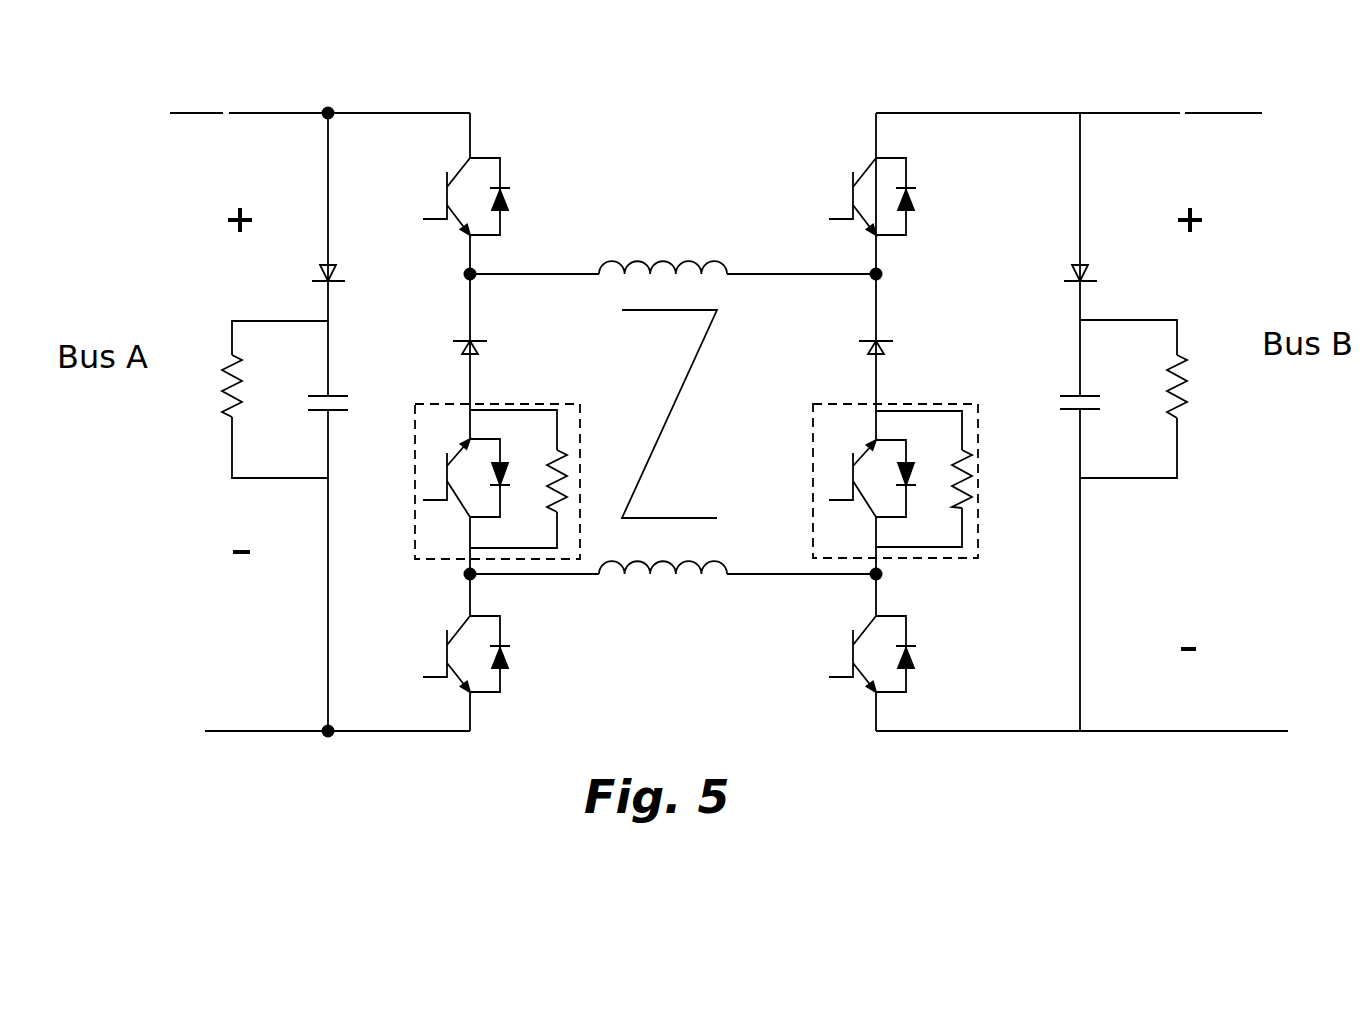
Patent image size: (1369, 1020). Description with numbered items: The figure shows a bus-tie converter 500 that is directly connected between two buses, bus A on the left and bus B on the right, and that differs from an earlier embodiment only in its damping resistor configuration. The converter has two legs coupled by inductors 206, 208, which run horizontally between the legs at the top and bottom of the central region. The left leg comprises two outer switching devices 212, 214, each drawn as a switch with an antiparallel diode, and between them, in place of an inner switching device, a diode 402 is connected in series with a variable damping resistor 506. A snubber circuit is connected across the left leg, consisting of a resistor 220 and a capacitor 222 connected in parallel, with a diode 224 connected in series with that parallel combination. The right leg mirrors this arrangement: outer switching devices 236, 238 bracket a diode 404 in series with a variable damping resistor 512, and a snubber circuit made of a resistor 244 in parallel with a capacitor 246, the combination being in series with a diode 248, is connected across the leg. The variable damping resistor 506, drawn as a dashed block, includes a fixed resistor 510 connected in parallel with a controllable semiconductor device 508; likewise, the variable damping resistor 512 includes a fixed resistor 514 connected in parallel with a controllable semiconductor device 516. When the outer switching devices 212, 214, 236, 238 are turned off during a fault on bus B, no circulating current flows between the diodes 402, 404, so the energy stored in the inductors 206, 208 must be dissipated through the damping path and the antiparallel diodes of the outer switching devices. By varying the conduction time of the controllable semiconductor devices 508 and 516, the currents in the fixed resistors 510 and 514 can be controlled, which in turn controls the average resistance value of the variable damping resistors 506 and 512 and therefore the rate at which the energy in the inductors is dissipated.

The bus-tie converter 500 is at (178, 57).
The inductor 206 is at (688, 258).
The inductor 208 is at (700, 565).
The outer switching device 212 is at (492, 158).
The outer switching device 214 is at (500, 692).
The resistor 220 is at (242, 389).
The capacitor 222 is at (322, 413).
The diode 224 is at (338, 264).
The outer switching device 236 is at (848, 179).
The outer switching device 238 is at (848, 652).
The resistor 244 is at (1180, 381).
The capacitor 246 is at (1092, 395).
The diode 248 is at (1084, 266).
The diode 402 is at (466, 356).
The diode 404 is at (870, 356).
The variable damping resistor 506 is at (415, 437).
The controllable semiconductor device 508 is at (460, 506).
The fixed resistor 510 is at (558, 455).
The variable damping resistor 512 is at (812, 452).
The fixed resistor 514 is at (967, 462).
The controllable semiconductor device 516 is at (873, 518).